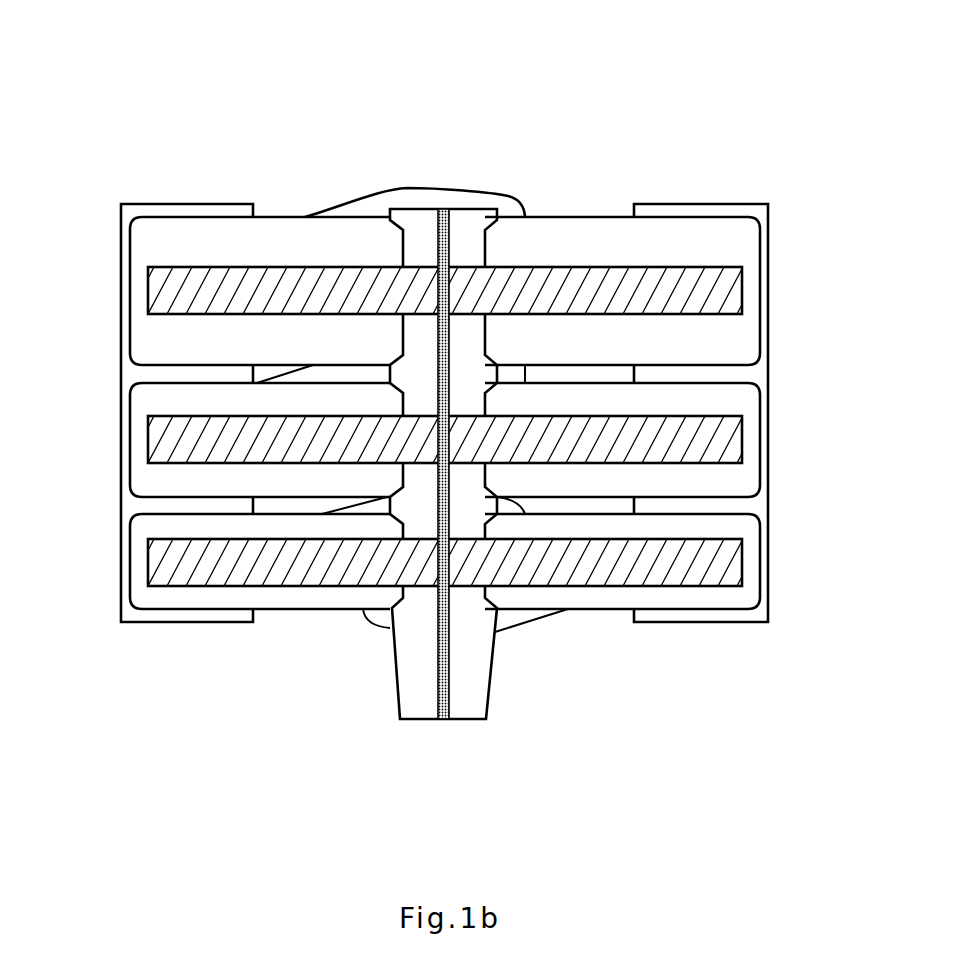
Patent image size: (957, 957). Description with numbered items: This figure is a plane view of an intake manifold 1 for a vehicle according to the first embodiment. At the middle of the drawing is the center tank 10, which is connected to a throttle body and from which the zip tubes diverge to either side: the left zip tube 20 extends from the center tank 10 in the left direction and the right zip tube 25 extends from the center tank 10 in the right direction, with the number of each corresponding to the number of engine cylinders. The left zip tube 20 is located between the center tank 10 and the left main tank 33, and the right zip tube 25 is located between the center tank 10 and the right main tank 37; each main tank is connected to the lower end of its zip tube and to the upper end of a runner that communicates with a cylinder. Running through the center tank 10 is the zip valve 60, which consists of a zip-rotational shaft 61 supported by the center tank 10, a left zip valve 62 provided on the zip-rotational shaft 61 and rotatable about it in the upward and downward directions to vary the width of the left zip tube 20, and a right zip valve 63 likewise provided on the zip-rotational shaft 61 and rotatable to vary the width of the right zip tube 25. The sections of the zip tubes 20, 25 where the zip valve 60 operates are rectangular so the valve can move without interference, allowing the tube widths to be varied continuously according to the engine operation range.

The intake manifold 1 is at (445, 399).
The center tank 10 is at (469, 712).
The left zip tube 20 is at (137, 288).
The right zip tube 25 is at (752, 285).
The left main tank 33 is at (186, 212).
The right main tank 37 is at (700, 212).
The zip valve 60 is at (433, 429).
The zip-rotational shaft 61 is at (442, 212).
The left zip valve 62 is at (327, 273).
The right zip valve 63 is at (505, 367).